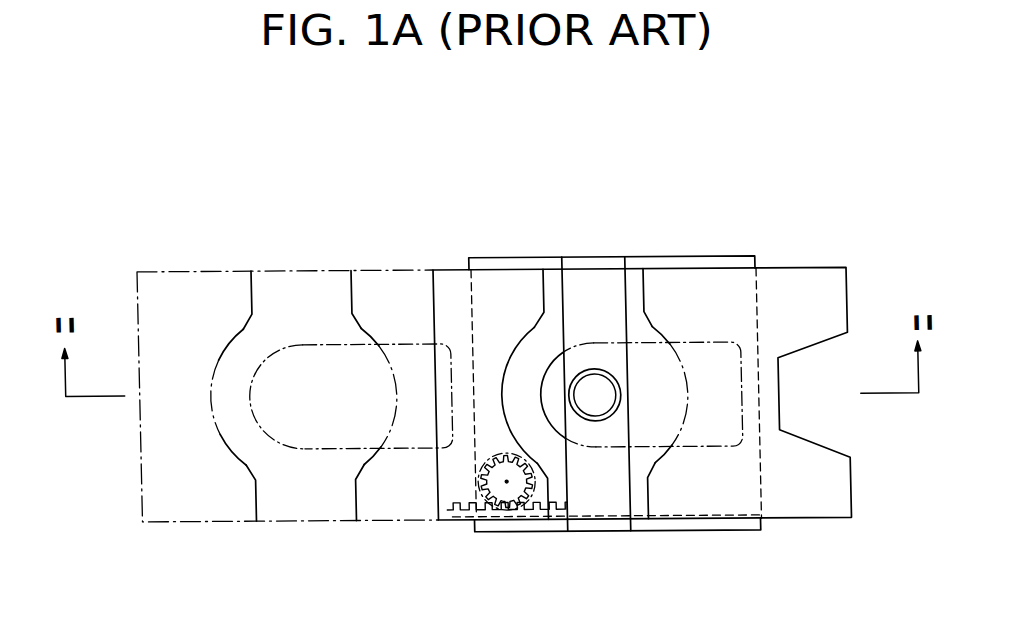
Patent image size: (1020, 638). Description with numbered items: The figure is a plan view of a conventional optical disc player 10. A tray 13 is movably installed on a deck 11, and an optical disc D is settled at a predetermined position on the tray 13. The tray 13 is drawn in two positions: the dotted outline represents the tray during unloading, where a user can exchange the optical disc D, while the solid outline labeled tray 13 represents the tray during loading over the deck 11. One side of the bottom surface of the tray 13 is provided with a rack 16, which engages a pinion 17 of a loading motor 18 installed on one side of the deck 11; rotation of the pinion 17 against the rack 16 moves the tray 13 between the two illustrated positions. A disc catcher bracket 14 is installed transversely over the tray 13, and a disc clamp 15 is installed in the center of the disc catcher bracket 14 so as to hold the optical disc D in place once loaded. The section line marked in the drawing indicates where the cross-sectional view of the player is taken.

The optical disc player 10 is at (735, 192).
The deck 11 is at (586, 521).
The tray 13 is at (792, 270).
The disc catcher bracket 14 is at (610, 506).
The disc clamp 15 is at (600, 384).
The rack 16 is at (462, 504).
The pinion 17 is at (502, 482).
The loading motor 18 is at (474, 470).
The optical disc D is at (540, 348).